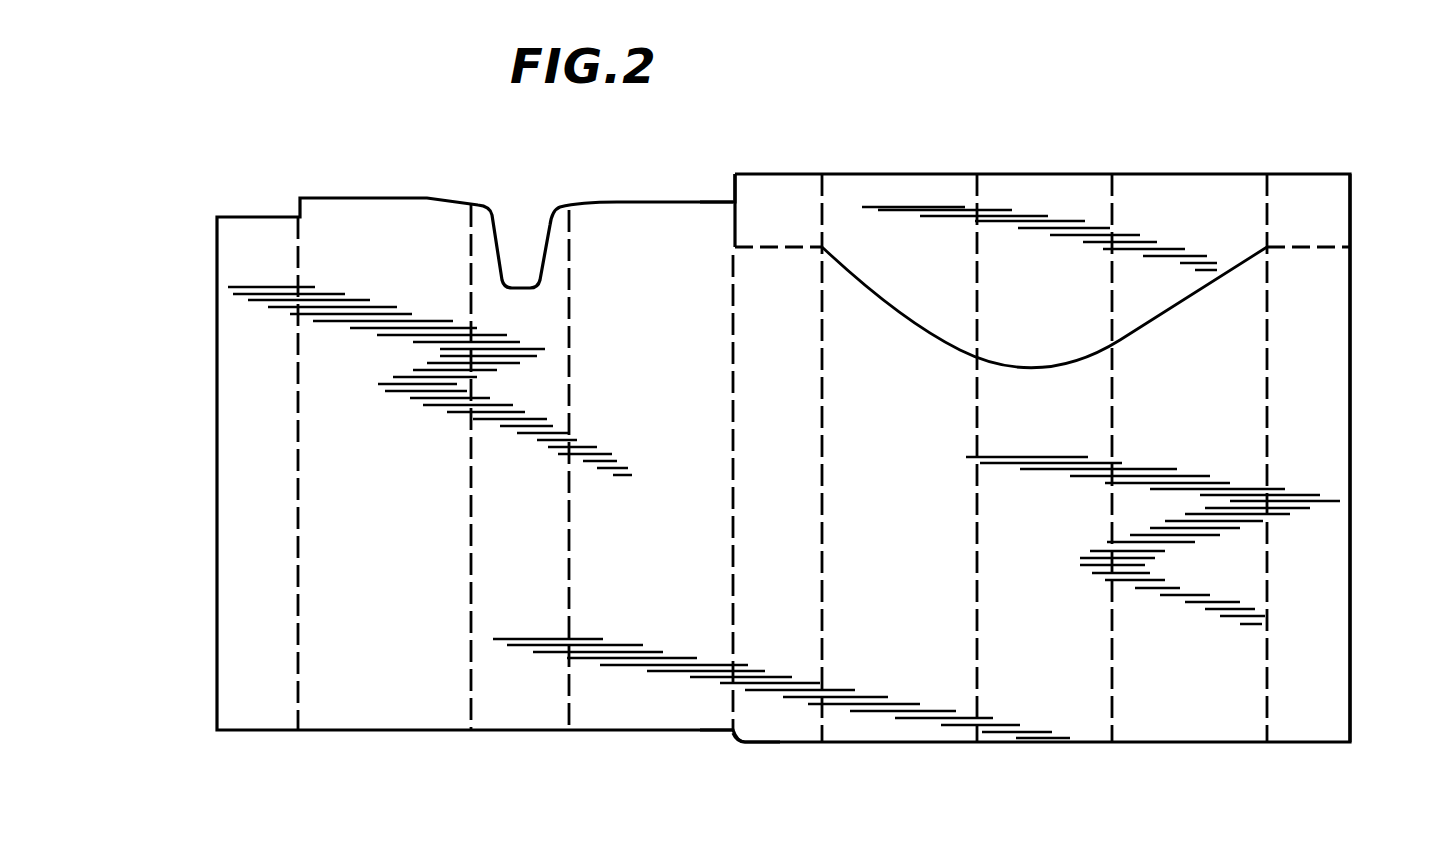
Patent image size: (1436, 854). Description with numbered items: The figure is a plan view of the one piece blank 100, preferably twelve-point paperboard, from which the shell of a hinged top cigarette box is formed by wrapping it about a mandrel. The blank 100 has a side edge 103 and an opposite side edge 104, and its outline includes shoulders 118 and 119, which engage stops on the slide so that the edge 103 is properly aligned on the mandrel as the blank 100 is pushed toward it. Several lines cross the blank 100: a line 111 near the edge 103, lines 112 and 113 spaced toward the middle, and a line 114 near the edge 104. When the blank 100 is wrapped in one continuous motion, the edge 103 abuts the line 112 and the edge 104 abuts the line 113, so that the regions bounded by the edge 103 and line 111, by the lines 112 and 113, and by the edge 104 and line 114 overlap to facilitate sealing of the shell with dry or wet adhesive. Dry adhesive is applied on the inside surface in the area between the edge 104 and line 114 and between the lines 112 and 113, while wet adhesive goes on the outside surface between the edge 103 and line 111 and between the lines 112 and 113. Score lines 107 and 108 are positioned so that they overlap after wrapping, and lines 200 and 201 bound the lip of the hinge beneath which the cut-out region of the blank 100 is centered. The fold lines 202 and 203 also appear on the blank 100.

The blank 100 is at (1233, 160).
The edge 103 is at (214, 579).
The edge 104 is at (1366, 522).
The score line 107 is at (790, 253).
The score line 108 is at (1300, 255).
The line 111 is at (305, 605).
The line 112 is at (729, 533).
The line 113 is at (831, 539).
The line 114 is at (1262, 566).
The shoulder 118 is at (729, 739).
The shoulder 119 is at (727, 194).
The line 200 is at (1110, 696).
The line 201 is at (973, 665).
The fold line 202 is at (577, 622).
The fold line 203 is at (479, 603).